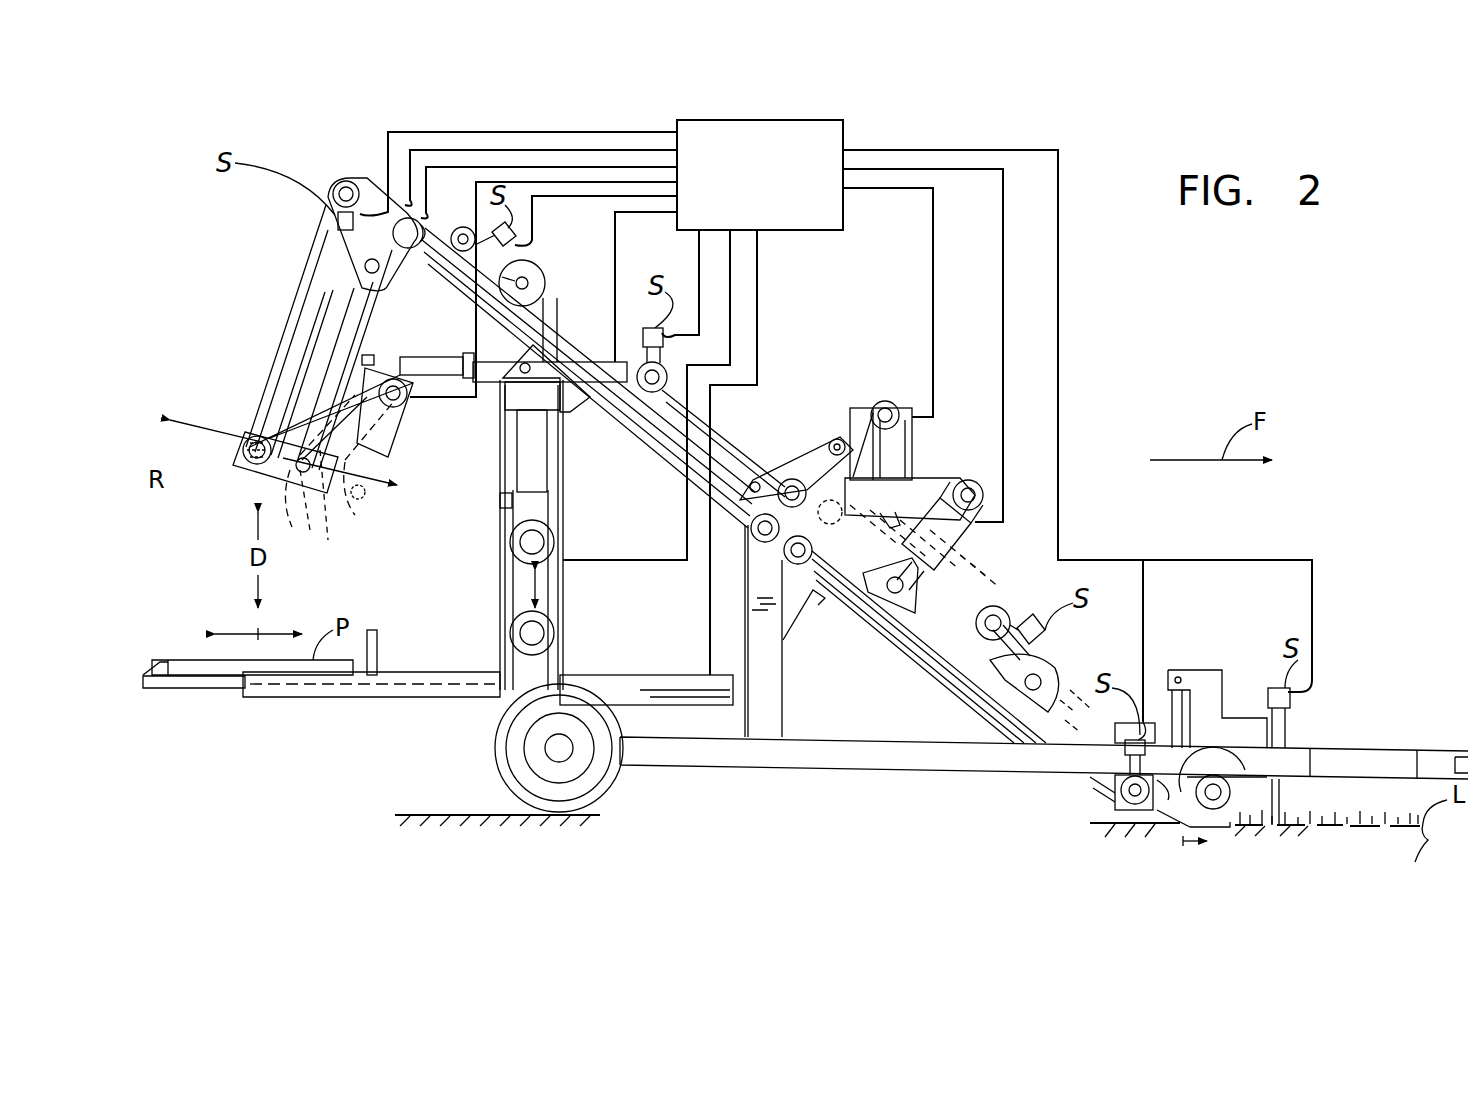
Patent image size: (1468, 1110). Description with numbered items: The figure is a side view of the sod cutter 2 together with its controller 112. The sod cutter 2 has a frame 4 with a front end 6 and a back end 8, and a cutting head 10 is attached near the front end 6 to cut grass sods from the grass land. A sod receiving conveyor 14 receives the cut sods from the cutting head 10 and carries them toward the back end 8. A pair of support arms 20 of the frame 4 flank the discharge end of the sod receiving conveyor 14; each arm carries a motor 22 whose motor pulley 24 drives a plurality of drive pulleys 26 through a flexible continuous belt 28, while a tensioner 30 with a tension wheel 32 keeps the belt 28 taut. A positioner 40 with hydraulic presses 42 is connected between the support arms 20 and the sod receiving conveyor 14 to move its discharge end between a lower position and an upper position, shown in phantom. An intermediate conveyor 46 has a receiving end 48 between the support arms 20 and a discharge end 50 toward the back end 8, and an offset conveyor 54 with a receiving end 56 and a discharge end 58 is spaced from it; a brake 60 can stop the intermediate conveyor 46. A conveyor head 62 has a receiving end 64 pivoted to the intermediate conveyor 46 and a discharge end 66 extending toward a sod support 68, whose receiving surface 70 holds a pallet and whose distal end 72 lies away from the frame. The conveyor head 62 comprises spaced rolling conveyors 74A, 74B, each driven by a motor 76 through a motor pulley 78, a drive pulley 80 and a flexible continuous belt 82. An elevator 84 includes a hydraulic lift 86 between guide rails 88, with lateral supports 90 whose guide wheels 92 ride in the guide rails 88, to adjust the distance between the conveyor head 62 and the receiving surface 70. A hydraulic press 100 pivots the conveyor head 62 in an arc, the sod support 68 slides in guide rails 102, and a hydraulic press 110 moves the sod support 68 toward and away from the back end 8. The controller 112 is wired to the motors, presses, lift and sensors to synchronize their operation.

The sod cutter 2 is at (1172, 400).
The frame 4 is at (757, 768).
The front end 6 is at (1378, 681).
The back end 8 is at (403, 588).
The cutting head 10 is at (1235, 690).
The sod receiving conveyor 14 is at (942, 665).
The support arms 20 is at (790, 685).
The motor 22 is at (912, 440).
The motor pulley 24 is at (885, 400).
The drive pulleys 26 is at (737, 547).
The flexible continuous belt 28 is at (870, 490).
The tensioner 30 is at (812, 440).
The tension wheel 32 is at (840, 440).
The positioner 40 is at (940, 565).
The hydraulic presses 42 is at (960, 535).
The intermediate conveyor 46 is at (573, 358).
The receiving end 48 is at (745, 560).
The discharge end 50 is at (455, 235).
The offset conveyor 54 is at (712, 428).
The receiving end 56 is at (765, 452).
The discharge end 58 is at (645, 325).
The brake 60 is at (408, 250).
The conveyor head 62 is at (286, 262).
The receiving end 64 is at (358, 180).
The discharge end 66 is at (272, 478).
The sod support 68 is at (230, 690).
The receiving surface 70 is at (212, 660).
The distal end 72 is at (160, 690).
The rolling conveyor 74A is at (330, 317).
The rolling conveyor 74B is at (300, 352).
The motor 76 is at (390, 432).
The motor pulley 78 is at (410, 400).
The drive pulley 80 is at (243, 450).
The flexible continuous belt 82 is at (297, 417).
The elevator 84 is at (534, 517).
The hydraulic lift 86 is at (545, 460).
The guide rails 88 is at (540, 278).
The lateral supports 90 is at (556, 400).
The guide wheels 92 is at (562, 535).
The hydraulic press 100 is at (458, 332).
The guide rails 102 is at (390, 697).
The hydraulic press 110 is at (707, 705).
The controller 112 is at (815, 120).